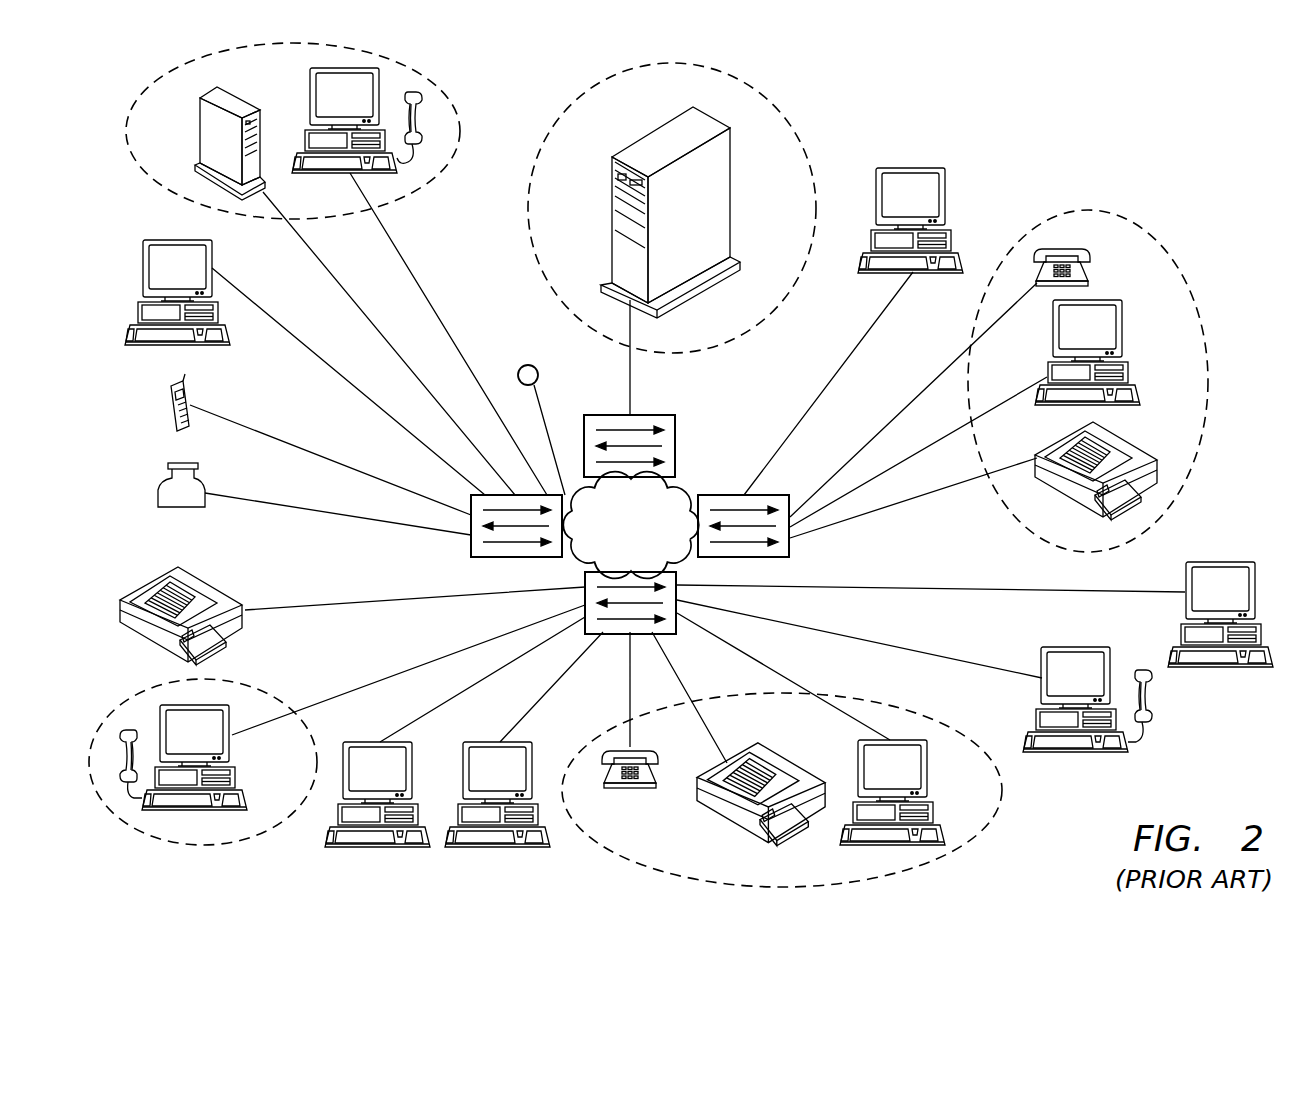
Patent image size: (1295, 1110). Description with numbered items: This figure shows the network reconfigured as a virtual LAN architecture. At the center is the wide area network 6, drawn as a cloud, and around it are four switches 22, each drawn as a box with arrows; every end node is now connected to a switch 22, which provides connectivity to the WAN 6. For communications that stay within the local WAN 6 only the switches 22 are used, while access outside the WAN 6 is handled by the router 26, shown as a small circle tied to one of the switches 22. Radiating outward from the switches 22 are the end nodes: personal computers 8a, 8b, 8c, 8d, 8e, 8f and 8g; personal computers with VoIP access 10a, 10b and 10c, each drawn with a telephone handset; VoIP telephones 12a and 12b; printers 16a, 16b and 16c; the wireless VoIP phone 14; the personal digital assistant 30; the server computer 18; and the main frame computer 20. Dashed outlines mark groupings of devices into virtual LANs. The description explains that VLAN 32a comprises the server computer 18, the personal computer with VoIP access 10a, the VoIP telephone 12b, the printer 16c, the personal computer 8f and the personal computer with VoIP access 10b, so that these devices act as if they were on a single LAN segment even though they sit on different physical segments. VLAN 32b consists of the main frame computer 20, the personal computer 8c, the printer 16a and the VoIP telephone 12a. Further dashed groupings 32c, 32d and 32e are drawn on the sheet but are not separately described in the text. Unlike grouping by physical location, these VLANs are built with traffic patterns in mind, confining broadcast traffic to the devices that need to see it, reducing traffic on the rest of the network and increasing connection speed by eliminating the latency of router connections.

The wide area network 6 is at (639, 537).
The switch 22 is at (650, 415).
The router 26 is at (526, 365).
The main frame computer 20 is at (660, 135).
The server computer 18 is at (208, 141).
The wireless voice over internet protocol phone 14 is at (170, 413).
The personal digital assistant 30 is at (158, 494).
The personal computer 8a is at (143, 268).
The personal computer 8b is at (910, 168).
The personal computer 8c is at (1122, 328).
The personal computer 8d is at (378, 847).
The personal computer 8e is at (498, 847).
The personal computer 8f is at (927, 770).
The personal computer 8g is at (1222, 668).
The personal computer with VoIP access 10a is at (310, 97).
The personal computer with VoIP access 10b is at (235, 783).
The personal computer with VoIP access 10c is at (1080, 753).
The VoIP telephone 12a is at (1092, 280).
The VoIP telephone 12b is at (630, 790).
The printer 16a is at (1146, 456).
The printer 16b is at (122, 606).
The printer 16c is at (727, 813).
The VLAN 32a is at (127, 131).
The VLAN 32b is at (793, 128).
The local network group 32c is at (1127, 216).
The local network group 32d is at (1001, 806).
The local network group 32e is at (180, 846).